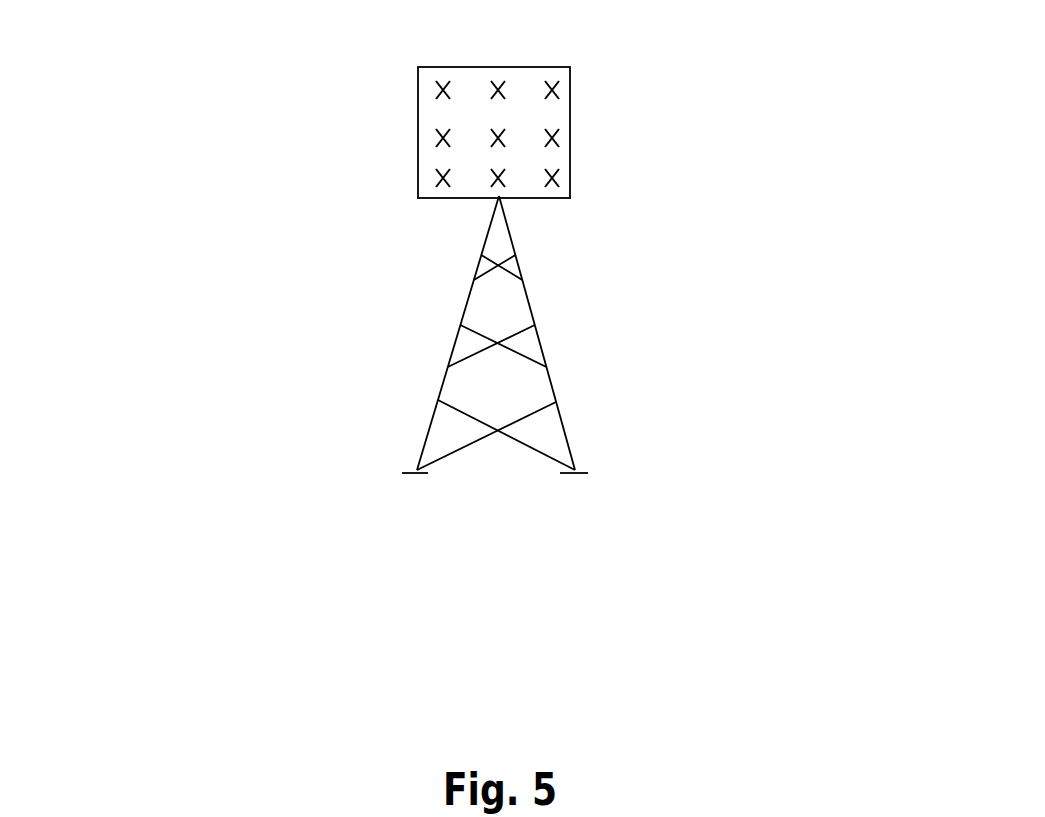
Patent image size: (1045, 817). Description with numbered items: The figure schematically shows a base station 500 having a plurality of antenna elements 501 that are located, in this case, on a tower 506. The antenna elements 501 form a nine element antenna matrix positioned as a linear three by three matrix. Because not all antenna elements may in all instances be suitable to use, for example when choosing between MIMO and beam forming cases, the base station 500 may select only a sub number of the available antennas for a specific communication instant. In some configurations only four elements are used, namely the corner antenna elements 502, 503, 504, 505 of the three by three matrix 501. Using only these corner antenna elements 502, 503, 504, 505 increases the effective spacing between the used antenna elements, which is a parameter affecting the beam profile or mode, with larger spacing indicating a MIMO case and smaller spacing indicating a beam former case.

The base station 500 is at (566, 248).
The antenna elements 501 is at (400, 144).
The antenna element 502 is at (314, 108).
The antenna element 503 is at (553, 90).
The antenna element 504 is at (435, 175).
The antenna element 505 is at (553, 178).
The tower 506 is at (453, 343).